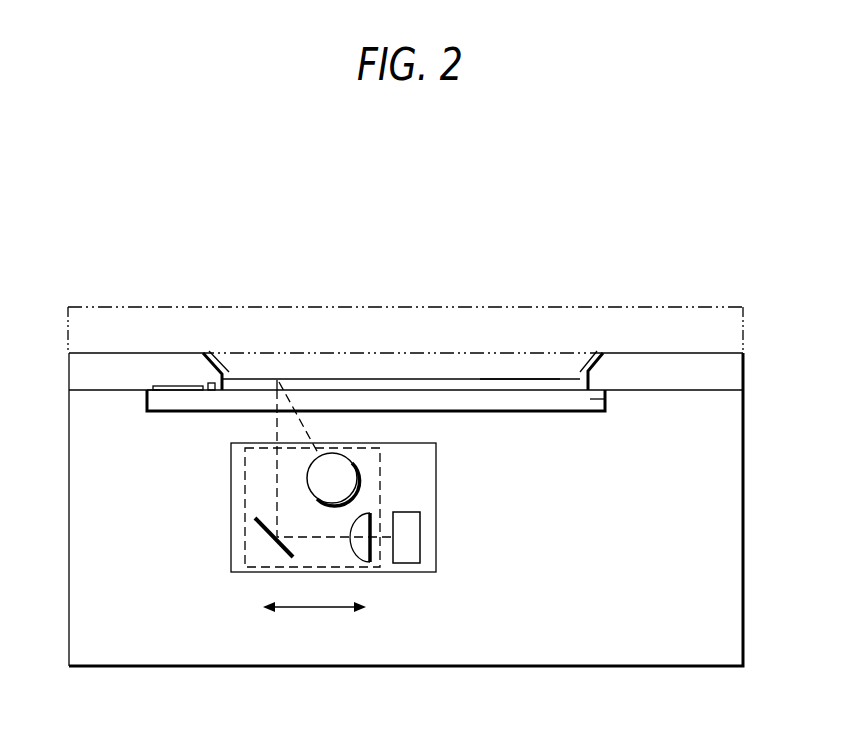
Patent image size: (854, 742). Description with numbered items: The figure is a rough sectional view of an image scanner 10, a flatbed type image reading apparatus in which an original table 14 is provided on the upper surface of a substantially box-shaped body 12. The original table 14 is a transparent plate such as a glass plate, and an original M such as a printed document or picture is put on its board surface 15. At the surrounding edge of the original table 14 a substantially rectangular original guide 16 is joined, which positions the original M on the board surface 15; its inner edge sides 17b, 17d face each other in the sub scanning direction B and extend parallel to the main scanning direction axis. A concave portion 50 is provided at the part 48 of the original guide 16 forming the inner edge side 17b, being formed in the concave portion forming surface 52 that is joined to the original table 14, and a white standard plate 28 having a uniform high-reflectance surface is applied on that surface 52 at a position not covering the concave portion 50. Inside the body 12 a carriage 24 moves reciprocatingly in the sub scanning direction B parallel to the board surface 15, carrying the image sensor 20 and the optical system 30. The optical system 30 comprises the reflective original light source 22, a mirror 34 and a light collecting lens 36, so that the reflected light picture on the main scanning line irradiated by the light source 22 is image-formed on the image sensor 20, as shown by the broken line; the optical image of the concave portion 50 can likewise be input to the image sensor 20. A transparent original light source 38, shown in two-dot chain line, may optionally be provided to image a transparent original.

The image scanner 10 is at (121, 212).
The body 12 is at (743, 565).
The original table 14 is at (605, 399).
The board surface 15 is at (462, 379).
The original guide 16 is at (653, 360).
The inner edge side 17b is at (210, 383).
The inner edge side 17d is at (585, 377).
The image sensor 20 is at (410, 563).
The reflective original light source 22 is at (333, 463).
The carriage 24 is at (245, 573).
The white standard plate 28 is at (150, 392).
The optical system 30 is at (245, 507).
The mirror 34 is at (264, 530).
The light collecting lens 36 is at (363, 563).
The transparent original light source 38 is at (318, 307).
The part forming the inner edge side 48 is at (75, 373).
The concave portion 50 is at (163, 386).
The concave portion forming surface 52 is at (100, 392).
The original M is at (515, 379).
The sub scanning direction B is at (314, 622).